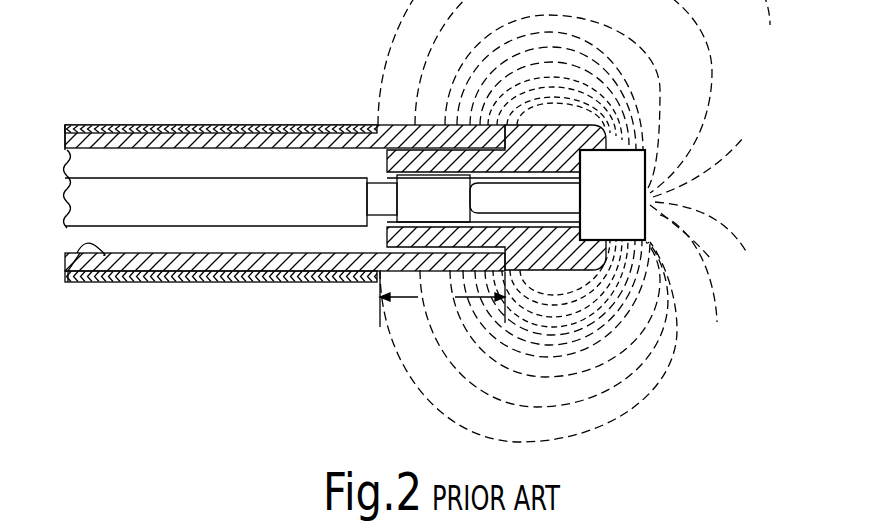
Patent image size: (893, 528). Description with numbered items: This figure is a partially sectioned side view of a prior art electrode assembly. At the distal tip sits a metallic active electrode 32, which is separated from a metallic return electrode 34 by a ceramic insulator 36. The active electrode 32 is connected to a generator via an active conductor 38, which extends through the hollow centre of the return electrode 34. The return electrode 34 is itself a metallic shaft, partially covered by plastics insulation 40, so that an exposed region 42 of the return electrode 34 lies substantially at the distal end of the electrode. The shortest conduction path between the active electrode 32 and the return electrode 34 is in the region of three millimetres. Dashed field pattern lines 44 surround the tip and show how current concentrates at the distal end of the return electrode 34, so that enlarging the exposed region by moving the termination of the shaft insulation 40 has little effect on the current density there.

The active electrode 32 is at (625, 212).
The return electrode 34 is at (78, 246).
The ceramic insulator 36 is at (568, 250).
The active conductor 38 is at (167, 195).
The plastics insulation 40 is at (203, 283).
The exposed region 42 is at (442, 299).
The field pattern lines 44 is at (635, 82).